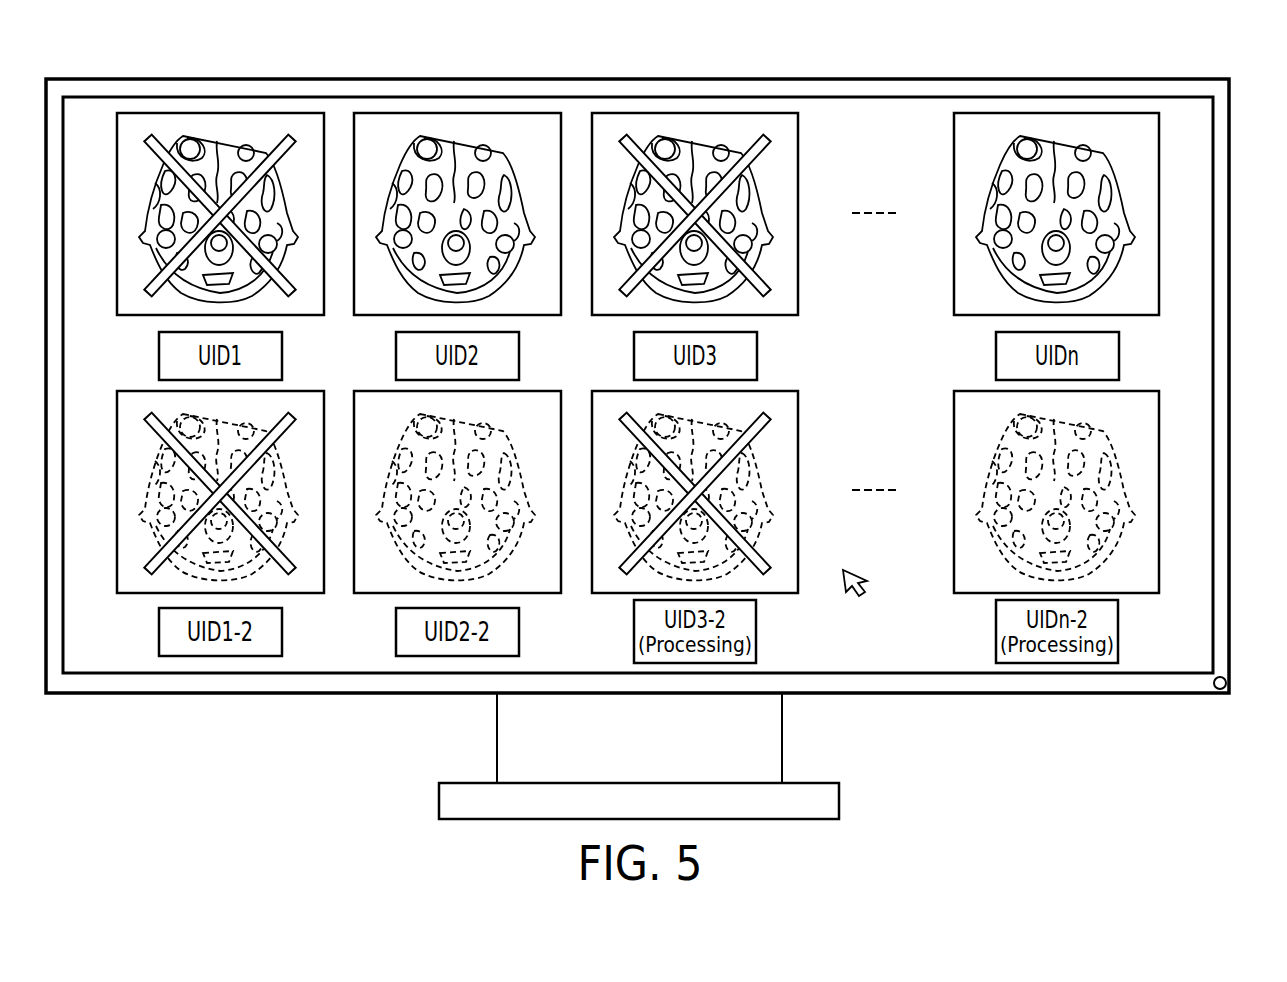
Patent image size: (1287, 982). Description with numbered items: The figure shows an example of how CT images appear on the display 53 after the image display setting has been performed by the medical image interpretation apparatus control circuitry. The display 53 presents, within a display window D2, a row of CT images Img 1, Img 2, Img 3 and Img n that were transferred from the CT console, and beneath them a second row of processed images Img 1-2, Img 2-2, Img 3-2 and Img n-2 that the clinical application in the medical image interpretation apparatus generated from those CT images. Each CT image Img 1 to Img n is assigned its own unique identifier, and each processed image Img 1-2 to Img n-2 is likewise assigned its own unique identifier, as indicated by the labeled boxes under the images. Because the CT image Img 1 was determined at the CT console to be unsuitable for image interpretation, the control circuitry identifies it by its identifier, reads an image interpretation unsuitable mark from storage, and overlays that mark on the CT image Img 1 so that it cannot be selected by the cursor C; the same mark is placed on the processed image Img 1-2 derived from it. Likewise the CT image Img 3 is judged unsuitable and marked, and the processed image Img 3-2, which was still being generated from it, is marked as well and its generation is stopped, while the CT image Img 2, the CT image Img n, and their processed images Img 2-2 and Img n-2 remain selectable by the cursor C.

The display 53 is at (1133, 79).
The display window D2 is at (1203, 362).
The cursor C is at (857, 597).
The CT image Img 1 is at (271, 120).
The CT image Img 2 is at (518, 120).
The CT image Img 3 is at (747, 120).
The CT image Img n is at (988, 120).
The processed image Img 1-2 is at (130, 582).
The processed image Img 2-2 is at (367, 582).
The processed image Img 3-2 is at (605, 582).
The processed image Img n-2 is at (967, 582).